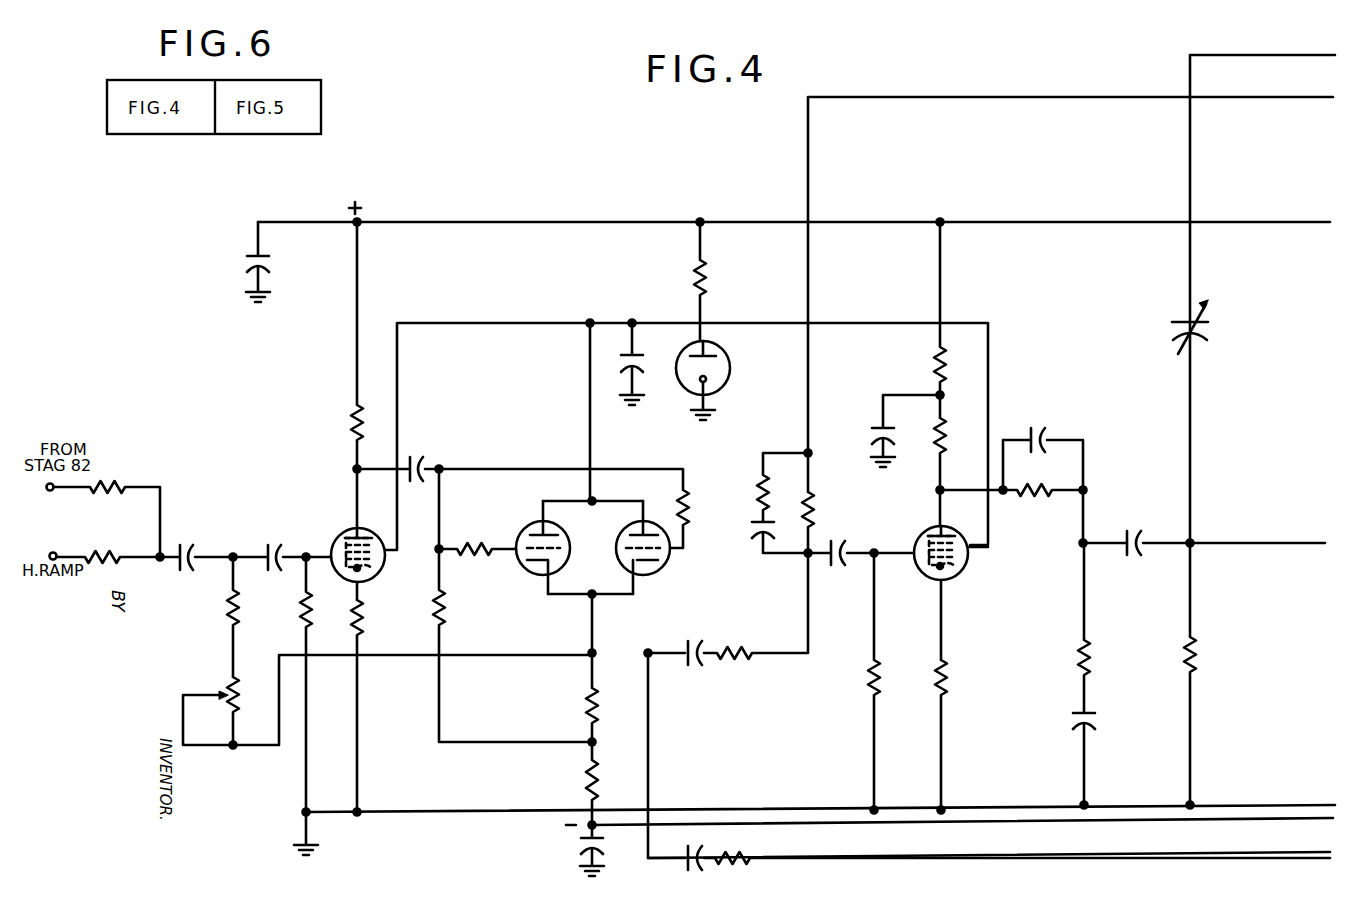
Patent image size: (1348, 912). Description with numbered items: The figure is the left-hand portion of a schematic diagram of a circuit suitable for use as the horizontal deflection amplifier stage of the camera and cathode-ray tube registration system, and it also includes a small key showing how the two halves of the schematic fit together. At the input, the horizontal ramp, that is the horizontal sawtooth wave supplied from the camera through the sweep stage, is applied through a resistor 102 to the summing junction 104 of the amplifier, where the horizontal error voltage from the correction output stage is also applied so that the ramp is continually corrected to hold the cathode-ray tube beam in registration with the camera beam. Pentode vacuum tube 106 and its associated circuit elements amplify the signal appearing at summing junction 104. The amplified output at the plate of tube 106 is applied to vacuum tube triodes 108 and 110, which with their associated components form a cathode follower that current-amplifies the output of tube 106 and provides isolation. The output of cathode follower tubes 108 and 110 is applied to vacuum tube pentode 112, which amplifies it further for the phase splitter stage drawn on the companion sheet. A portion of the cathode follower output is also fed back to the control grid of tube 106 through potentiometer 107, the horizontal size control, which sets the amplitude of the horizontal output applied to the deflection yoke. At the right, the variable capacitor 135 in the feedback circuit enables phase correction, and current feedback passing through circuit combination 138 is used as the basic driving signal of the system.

The resistor 102 is at (109, 576).
The summing junction 104 is at (162, 555).
The pentode vacuum tube 106 is at (347, 530).
The potentiometer 107 is at (230, 684).
The vacuum tube triode 108 is at (527, 530).
The vacuum tube triode 110 is at (657, 572).
The vacuum tube pentode 112 is at (958, 575).
The variable capacitor 135 is at (1212, 327).
The circuit combination 138 is at (786, 470).